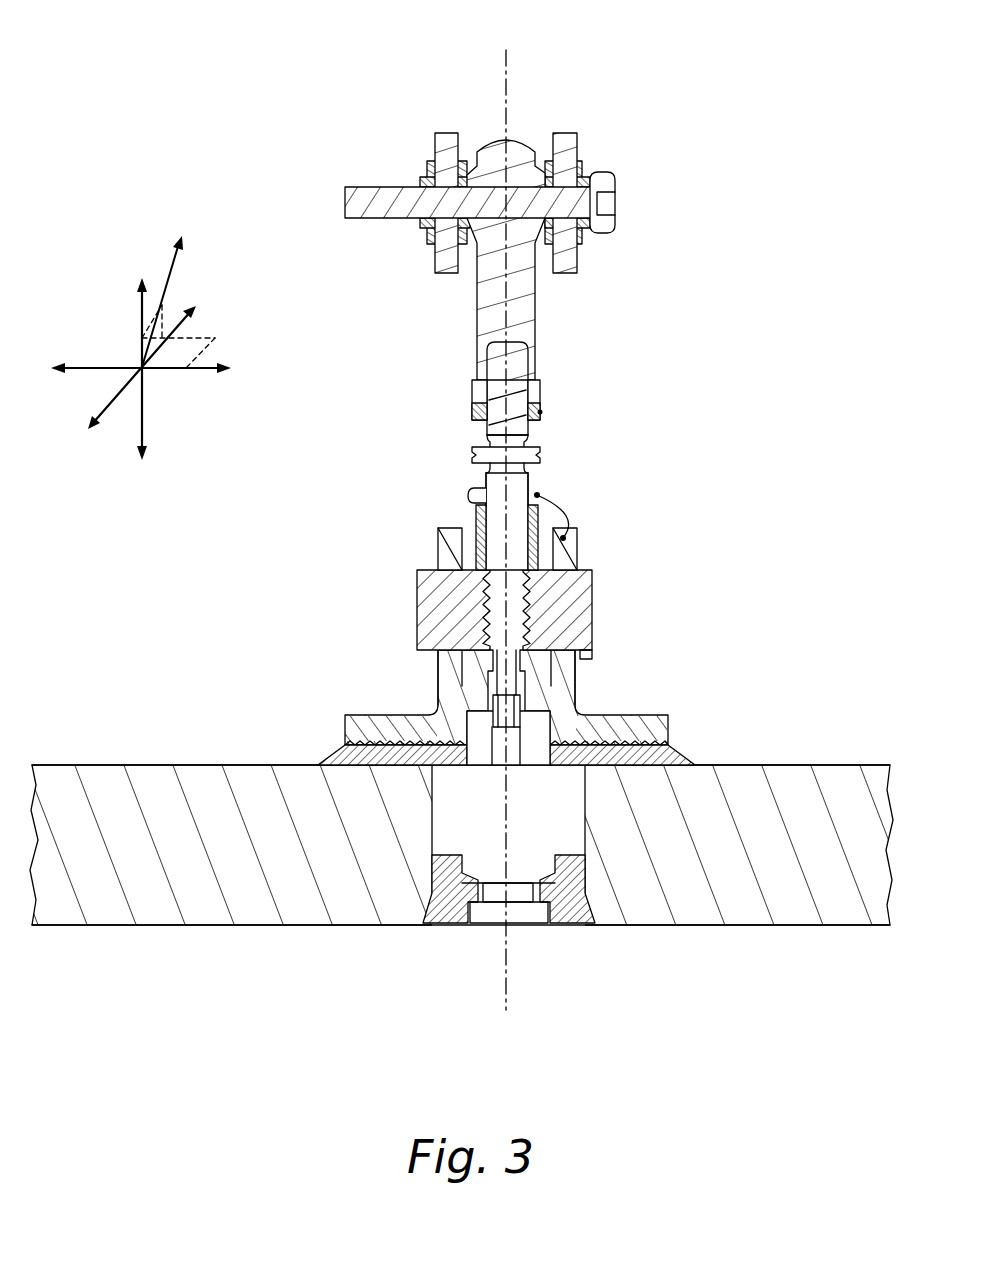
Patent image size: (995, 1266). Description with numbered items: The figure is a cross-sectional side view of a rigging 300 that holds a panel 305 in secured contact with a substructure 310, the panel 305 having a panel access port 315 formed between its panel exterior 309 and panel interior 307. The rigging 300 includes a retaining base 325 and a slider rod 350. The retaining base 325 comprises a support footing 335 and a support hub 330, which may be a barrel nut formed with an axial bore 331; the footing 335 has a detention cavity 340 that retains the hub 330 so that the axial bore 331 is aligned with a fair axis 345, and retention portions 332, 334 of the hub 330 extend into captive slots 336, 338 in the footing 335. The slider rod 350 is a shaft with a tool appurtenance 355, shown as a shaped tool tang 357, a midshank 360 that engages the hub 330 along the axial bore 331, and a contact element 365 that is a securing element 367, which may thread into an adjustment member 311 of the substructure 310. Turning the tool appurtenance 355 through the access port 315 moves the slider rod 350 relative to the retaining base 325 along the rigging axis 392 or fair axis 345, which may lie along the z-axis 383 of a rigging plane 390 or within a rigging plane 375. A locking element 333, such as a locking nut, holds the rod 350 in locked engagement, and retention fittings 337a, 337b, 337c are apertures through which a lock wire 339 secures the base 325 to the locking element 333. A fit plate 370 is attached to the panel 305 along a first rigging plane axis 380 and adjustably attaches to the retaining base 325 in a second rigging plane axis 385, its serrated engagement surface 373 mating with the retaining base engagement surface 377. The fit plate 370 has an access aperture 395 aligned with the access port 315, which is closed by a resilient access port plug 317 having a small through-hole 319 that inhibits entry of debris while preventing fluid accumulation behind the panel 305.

The rigging 300 is at (555, 476).
The panel 305 is at (740, 917).
The panel interior 307 is at (148, 763).
The panel exterior 309 is at (148, 927).
The substructure 310 is at (575, 256).
The adjustment member 311 is at (535, 305).
The panel access port 315 is at (586, 862).
The access port plug 317 is at (525, 925).
The through-hole 319 is at (492, 925).
The retaining base 325 is at (557, 530).
The support hub 330 is at (587, 587).
The axial bore 331 is at (528, 630).
The retention portion 332 is at (578, 662).
The locking element 333 is at (470, 497).
The retention portion 334 is at (509, 622).
The support footing 335 is at (448, 670).
The captive slot 336 is at (438, 568).
The retention fitting 337a is at (570, 540).
The retention fitting 337b is at (538, 495).
The retention fitting 337c is at (540, 412).
The captive slot 338 is at (593, 653).
The lock wire 339 is at (567, 512).
The detention cavity 340 is at (511, 697).
The fair axis 345 is at (513, 75).
The slider rod 350 is at (490, 483).
The tool appurtenance 355 is at (530, 682).
The shaped tool tang 357 is at (518, 718).
The midshank 360 is at (510, 542).
The contact element 365 is at (482, 432).
The securing element 367 is at (515, 367).
The fit plate 370 is at (675, 745).
The engagement surface 373 is at (408, 742).
The rigging plane 375 is at (193, 345).
The retaining base engagement surface 377 is at (380, 743).
The first rigging plane axis 380 is at (198, 372).
The z-axis 383 is at (142, 338).
The second rigging plane axis 385 is at (107, 402).
The rigging plane 390 is at (167, 312).
The rigging axis 392 is at (170, 266).
The access aperture 395 is at (488, 752).